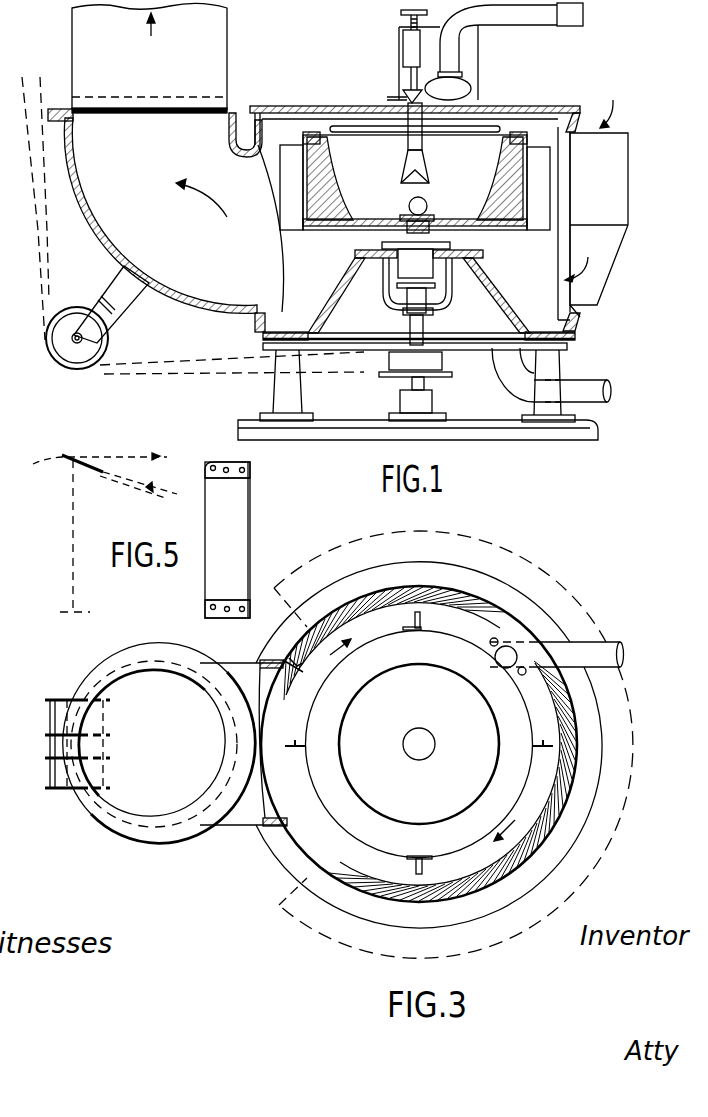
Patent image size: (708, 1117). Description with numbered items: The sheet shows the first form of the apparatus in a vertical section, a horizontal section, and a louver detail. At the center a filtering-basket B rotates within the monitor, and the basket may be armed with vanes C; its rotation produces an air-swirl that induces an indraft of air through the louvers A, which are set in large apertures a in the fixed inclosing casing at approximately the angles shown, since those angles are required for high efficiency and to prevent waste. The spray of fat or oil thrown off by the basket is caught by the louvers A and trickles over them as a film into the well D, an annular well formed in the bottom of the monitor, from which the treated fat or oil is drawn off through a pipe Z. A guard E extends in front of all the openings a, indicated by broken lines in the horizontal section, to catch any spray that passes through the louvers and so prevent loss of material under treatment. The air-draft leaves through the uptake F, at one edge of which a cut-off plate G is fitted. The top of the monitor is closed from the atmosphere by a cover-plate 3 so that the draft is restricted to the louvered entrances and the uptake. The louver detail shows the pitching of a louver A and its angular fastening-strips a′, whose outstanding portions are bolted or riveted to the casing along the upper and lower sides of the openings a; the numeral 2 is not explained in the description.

In FIG. 1, the louvers A is at (565, 190).
In FIG. 5, the louvers A is at (107, 452).
In FIG. 3, the louvers A is at (572, 763).
In FIG. 1, the filtering-basket B is at (415, 182).
In FIG. 3, the filtering-basket B is at (655, 758).
In FIG. 1, the vanes C is at (415, 187).
In FIG. 3, the vanes C is at (418, 743).
In FIG. 1, the well D is at (448, 295).
In FIG. 1, the guard E is at (611, 208).
In FIG. 1, the uptake F is at (193, 188).
In FIG. 3, the uptake F is at (166, 743).
In FIG. 3, the cut-off plate G is at (293, 681).
In FIG. 1, the pipe Z is at (599, 393).
In FIG. 3, the pipe Z is at (618, 641).
In FIG. 1, the casing 2 is at (573, 330).
In FIG. 3, the casing 2 is at (527, 628).
In FIG. 1, the cover-plate 3 is at (532, 107).
In FIG. 3, the apertures a is at (490, 614).
In FIG. 5, the angular fastening-strips a′ is at (231, 464).